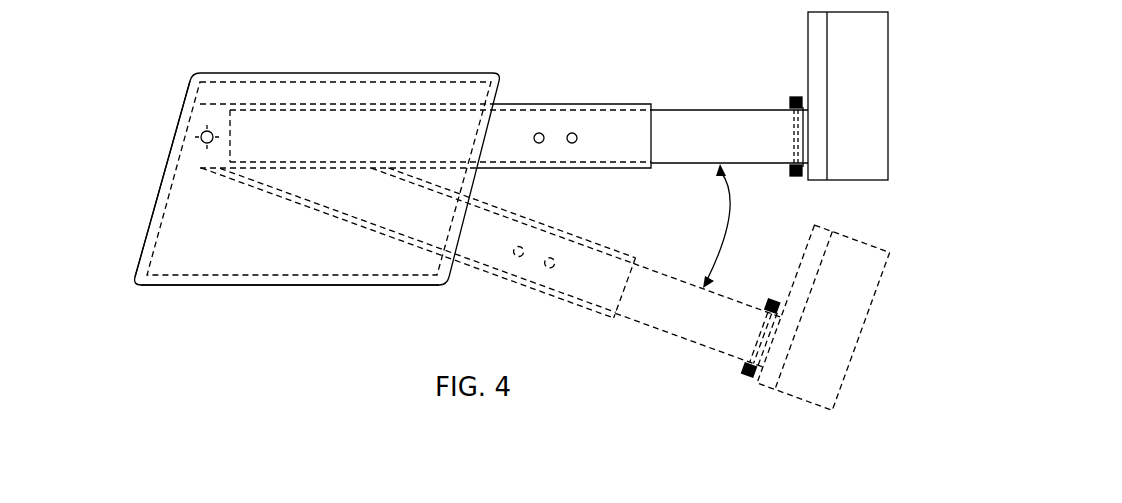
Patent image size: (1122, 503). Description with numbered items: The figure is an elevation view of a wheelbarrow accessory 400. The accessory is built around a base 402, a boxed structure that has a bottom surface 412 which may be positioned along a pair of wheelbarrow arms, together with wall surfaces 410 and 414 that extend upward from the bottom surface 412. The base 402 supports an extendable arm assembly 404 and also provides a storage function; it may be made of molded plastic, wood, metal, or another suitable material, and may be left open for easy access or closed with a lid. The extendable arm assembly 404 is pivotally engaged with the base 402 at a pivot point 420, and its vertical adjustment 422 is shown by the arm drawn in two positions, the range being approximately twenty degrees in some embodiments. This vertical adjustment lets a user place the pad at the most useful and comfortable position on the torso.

The wheelbarrow accessory 400 is at (143, 58).
The base 402 is at (317, 179).
The extendable arm assembly 404 is at (637, 103).
The wall surface 410 is at (500, 95).
The bottom surface 412 is at (245, 285).
The wall surface 414 is at (150, 239).
The pivot point 420 is at (198, 137).
The vertical adjustment 422 is at (729, 218).